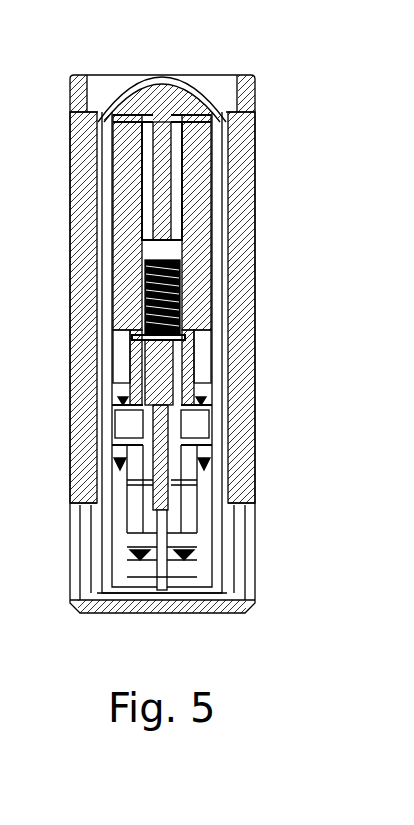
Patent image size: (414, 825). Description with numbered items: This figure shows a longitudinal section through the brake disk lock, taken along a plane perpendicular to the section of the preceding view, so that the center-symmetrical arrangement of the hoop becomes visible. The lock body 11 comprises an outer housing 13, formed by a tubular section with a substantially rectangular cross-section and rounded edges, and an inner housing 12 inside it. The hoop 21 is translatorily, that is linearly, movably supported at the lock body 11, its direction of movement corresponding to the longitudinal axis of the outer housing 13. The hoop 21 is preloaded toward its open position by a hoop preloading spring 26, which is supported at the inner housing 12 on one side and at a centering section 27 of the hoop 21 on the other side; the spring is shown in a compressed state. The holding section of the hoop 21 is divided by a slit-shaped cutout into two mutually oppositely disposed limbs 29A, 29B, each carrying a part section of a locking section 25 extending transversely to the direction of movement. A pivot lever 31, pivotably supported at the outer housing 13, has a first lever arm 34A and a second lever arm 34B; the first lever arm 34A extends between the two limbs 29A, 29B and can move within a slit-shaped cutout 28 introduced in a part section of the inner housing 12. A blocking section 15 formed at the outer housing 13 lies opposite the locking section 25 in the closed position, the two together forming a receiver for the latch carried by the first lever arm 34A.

The lock body 11 is at (258, 218).
The inner housing 12 is at (168, 364).
The outer housing 13 is at (243, 140).
The blocking section 15 is at (118, 393).
The hoop 21 is at (159, 98).
The locking section 25 is at (73, 494).
The hoop preloading spring 26 is at (163, 262).
The centering section 27 is at (163, 187).
The slit-shaped cutout 28 is at (205, 485).
The limb 29A is at (105, 545).
The limb 29B is at (237, 562).
The pivot lever 31 is at (230, 408).
The first lever arm 34A is at (198, 425).
The second lever arm 34B is at (196, 553).